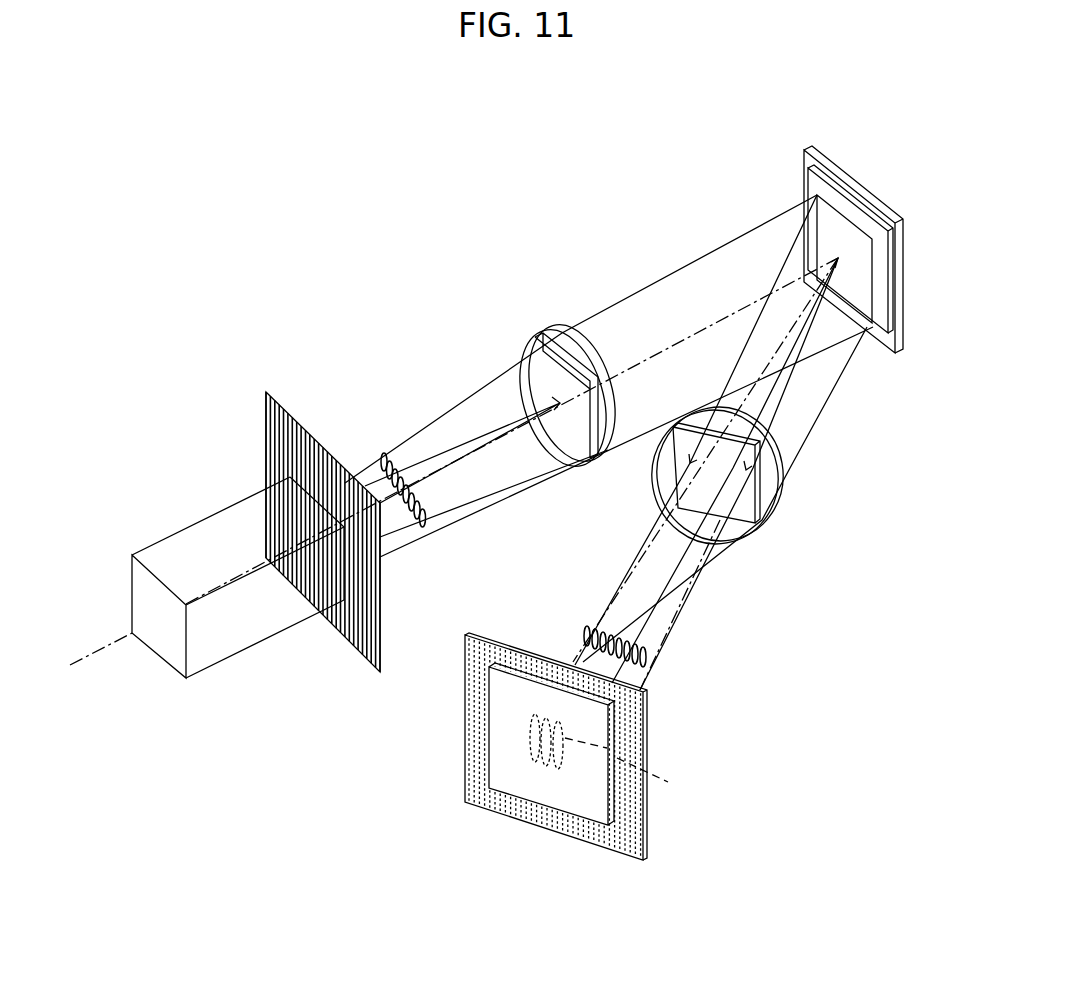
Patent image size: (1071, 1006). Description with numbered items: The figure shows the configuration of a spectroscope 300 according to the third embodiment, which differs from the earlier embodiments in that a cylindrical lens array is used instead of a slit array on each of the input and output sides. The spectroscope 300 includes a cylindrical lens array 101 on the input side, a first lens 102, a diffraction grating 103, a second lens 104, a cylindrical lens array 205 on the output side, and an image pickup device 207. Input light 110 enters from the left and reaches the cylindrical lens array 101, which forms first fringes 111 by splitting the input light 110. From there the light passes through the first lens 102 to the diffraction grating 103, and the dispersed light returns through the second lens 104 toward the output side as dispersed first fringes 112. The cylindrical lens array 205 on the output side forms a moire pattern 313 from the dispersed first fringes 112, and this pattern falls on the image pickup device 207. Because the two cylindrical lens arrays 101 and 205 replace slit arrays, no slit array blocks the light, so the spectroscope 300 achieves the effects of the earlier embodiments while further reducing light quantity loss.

The spectroscope 300 is at (560, 156).
The input light 110 is at (218, 648).
The cylindrical lens array 101 is at (265, 418).
The first fringes 111 is at (383, 460).
The first lens 102 is at (535, 338).
The diffraction grating 103 is at (813, 185).
The second lens 104 is at (757, 528).
The dispersed first fringes 112 is at (646, 648).
The cylindrical lens array 205 is at (647, 733).
The image pickup device 207 is at (484, 744).
The moire pattern 313 is at (642, 766).